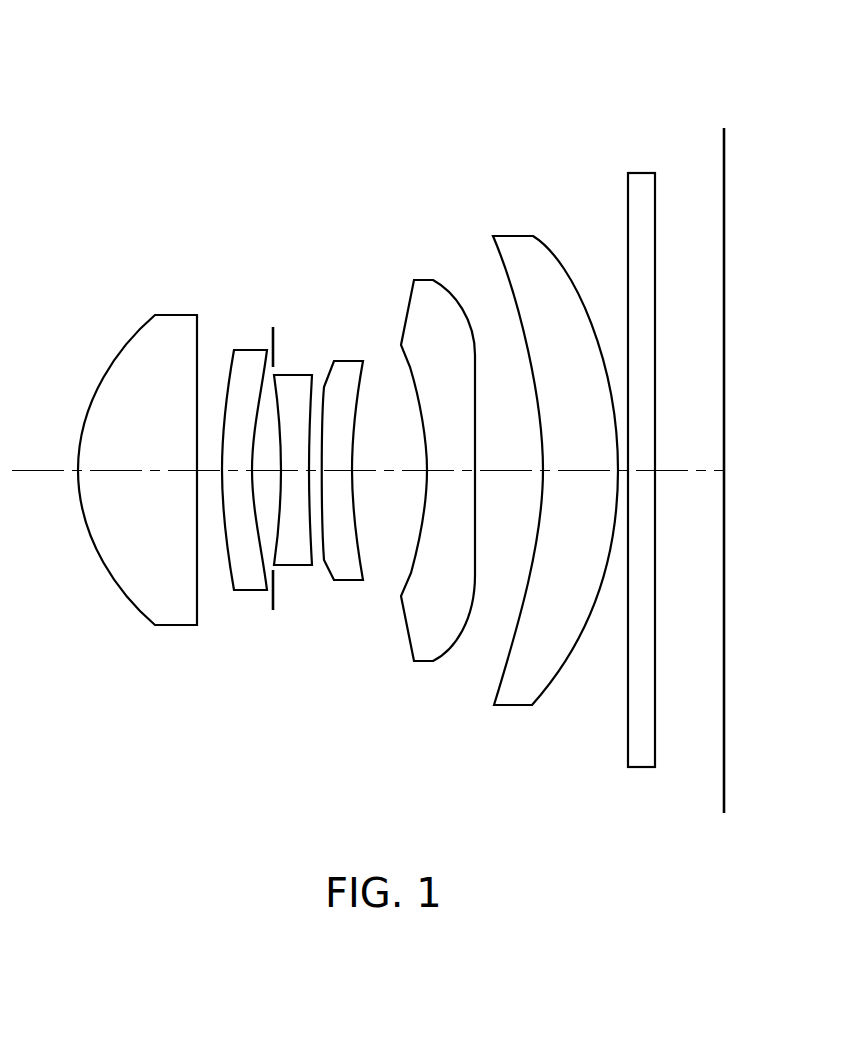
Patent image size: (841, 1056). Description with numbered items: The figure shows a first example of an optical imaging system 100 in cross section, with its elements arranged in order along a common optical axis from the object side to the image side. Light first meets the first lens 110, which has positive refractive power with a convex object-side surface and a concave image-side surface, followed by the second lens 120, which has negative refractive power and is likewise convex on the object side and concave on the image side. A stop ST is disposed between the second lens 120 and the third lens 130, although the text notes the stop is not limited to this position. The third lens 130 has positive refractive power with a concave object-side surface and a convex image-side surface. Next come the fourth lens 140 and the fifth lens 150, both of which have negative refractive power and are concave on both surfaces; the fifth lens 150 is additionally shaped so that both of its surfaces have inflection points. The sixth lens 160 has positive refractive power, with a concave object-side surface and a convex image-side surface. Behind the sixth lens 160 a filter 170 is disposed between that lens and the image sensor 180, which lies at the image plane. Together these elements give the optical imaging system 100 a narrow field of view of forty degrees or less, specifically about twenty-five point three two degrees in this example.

The optical imaging system 100 is at (285, 247).
The first lens 110 is at (132, 590).
The second lens 120 is at (243, 580).
The stop ST is at (272, 338).
The third lens 130 is at (295, 562).
The fourth lens 140 is at (345, 573).
The fifth lens 150 is at (413, 650).
The sixth lens 160 is at (520, 707).
The filter 170 is at (643, 762).
The image sensor 180 is at (724, 178).